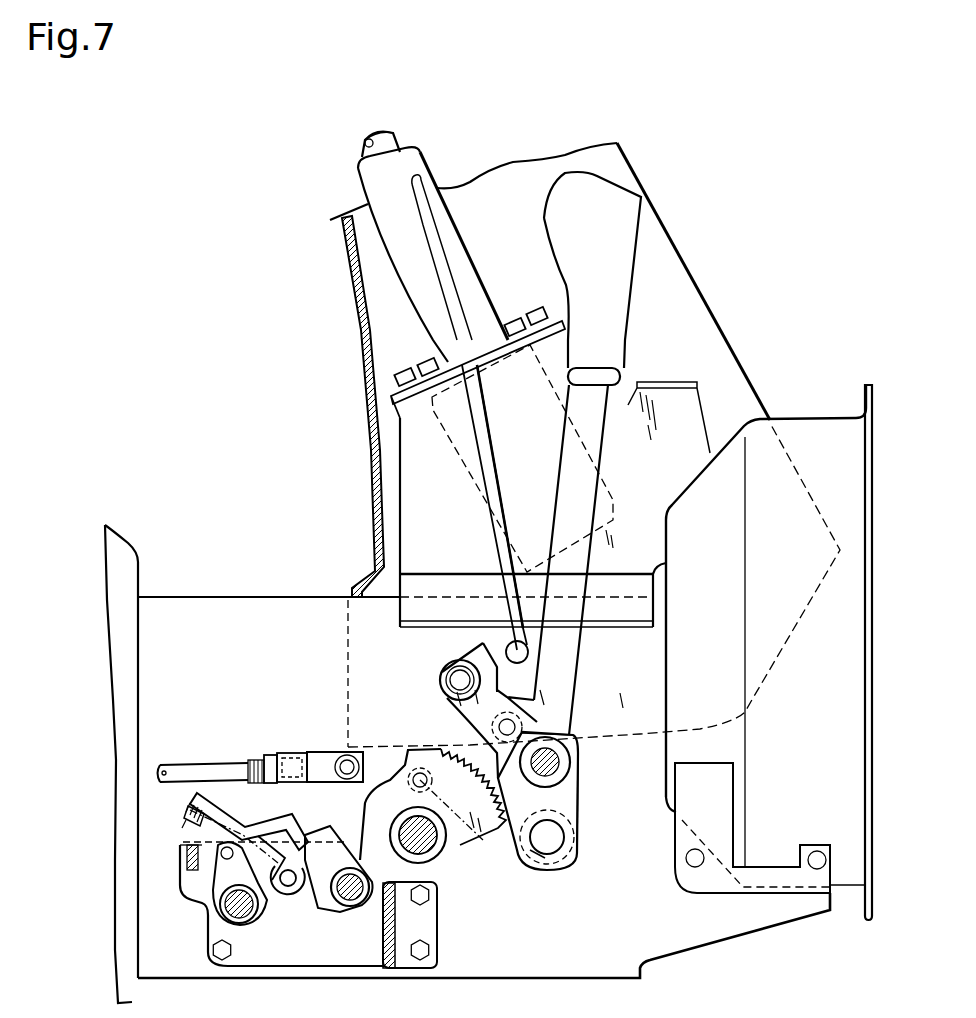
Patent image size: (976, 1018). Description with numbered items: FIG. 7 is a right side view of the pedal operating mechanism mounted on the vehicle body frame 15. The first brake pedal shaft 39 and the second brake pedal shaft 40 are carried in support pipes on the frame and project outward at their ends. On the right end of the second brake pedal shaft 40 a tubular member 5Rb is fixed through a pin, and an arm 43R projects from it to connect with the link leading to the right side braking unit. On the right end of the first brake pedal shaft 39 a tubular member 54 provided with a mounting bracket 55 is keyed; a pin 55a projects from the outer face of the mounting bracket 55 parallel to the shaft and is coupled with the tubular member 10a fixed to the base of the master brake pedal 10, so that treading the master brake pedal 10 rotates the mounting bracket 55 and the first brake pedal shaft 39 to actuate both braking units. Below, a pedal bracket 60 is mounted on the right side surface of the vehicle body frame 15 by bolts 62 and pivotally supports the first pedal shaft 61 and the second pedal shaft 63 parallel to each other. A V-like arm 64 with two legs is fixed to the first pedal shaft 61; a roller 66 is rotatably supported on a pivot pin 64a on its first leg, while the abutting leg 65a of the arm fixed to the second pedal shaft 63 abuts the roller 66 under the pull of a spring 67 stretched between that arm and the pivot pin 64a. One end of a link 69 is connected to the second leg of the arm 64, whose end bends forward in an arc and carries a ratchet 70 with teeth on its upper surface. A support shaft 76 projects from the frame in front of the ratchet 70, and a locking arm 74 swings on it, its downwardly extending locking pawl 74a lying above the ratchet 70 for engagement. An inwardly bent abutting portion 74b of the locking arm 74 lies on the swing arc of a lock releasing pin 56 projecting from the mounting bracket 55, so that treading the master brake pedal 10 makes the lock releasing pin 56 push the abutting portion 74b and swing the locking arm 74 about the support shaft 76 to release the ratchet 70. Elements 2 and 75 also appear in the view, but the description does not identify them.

The body panel 2 is at (372, 392).
The master brake pedal 10 is at (577, 195).
The tubular member 10a is at (572, 758).
The vehicle body frame 15 is at (803, 428).
The first brake pedal shaft 39 is at (560, 848).
The second brake pedal shaft 40 is at (440, 873).
The arm 43R is at (483, 838).
The tubular member 5Rb is at (436, 848).
The tubular member 54 is at (548, 860).
The mounting bracket 55 is at (583, 840).
The pin 55a is at (580, 775).
The lock releasing pin 56 is at (498, 727).
The pedal bracket 60 is at (437, 938).
The first pedal shaft 61 is at (348, 902).
The bolts 62 is at (420, 960).
The second pedal shaft 63 is at (212, 927).
The arm 64 is at (330, 910).
The pivot pin 64a is at (298, 878).
The abutting leg 65a is at (303, 843).
The roller 66 is at (287, 888).
The spring 67 is at (185, 813).
The link 69 is at (208, 760).
The ratchet 70 is at (462, 748).
The locking arm 74 is at (473, 648).
The locking pawl 74a is at (582, 800).
The abutting portion 74b is at (540, 690).
The rod 75 is at (414, 178).
The support shaft 76 is at (440, 680).